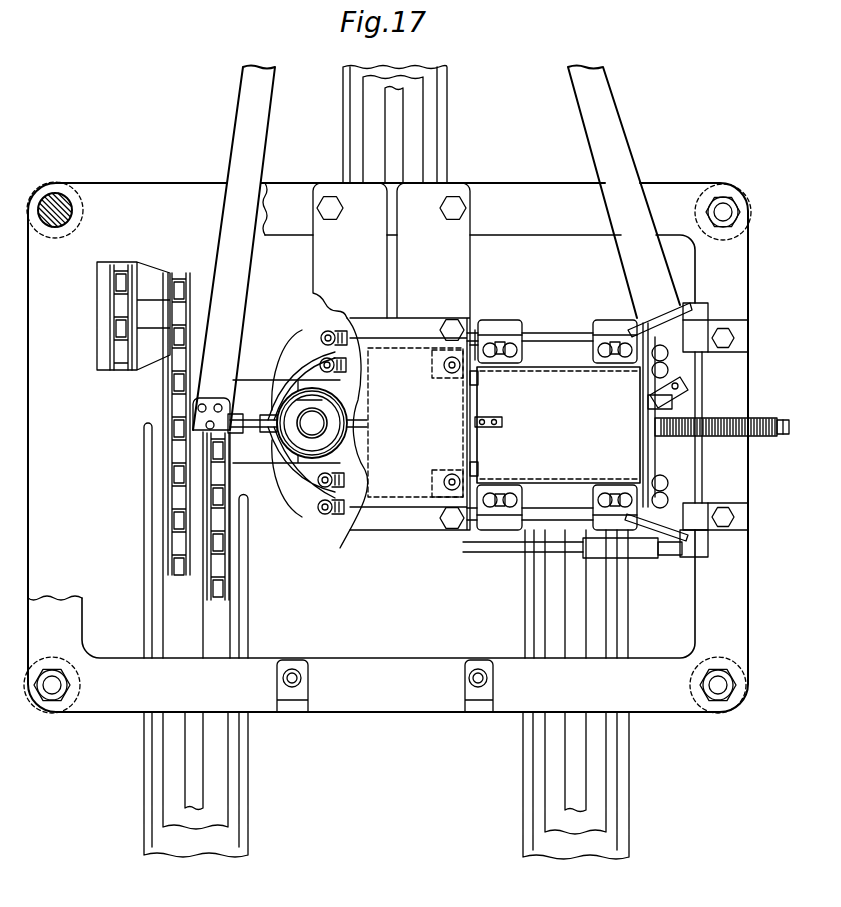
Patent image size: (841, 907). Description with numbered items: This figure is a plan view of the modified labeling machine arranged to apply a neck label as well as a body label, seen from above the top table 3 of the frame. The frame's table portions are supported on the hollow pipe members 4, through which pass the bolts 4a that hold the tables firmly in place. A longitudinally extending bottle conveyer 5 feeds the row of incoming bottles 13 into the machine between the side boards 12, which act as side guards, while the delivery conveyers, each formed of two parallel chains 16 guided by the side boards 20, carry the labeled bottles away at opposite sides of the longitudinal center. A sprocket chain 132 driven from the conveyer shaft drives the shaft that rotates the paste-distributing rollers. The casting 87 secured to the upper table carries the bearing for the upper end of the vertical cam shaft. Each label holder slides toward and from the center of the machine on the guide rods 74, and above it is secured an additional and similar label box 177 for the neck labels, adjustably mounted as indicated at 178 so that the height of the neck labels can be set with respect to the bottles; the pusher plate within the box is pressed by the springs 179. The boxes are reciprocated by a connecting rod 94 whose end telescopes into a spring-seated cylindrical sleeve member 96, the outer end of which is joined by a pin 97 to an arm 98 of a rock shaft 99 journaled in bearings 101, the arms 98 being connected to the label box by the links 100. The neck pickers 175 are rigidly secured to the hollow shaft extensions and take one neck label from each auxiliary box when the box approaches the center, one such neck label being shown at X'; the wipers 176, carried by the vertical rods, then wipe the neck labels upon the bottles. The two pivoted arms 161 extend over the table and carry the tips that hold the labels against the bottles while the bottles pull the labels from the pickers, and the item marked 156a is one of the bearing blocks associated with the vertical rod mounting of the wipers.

The top table 3 is at (389, 448).
The hollow pipe member 4 is at (52, 194).
The bolt 4a is at (64, 198).
The bottle conveyer 5 is at (410, 73).
The side board 12 is at (345, 111).
The incoming bottle 13 is at (280, 421).
The delivery conveyer chain 16 is at (208, 528).
The side board 20 is at (147, 572).
The guide rod 74 is at (566, 336).
The casting 87 is at (391, 365).
The connecting rod 94 is at (513, 548).
The cylindrical sleeve member 96 is at (620, 548).
The pin 97 is at (690, 561).
The arm 98 is at (701, 308).
The rock shaft 99 is at (702, 463).
The link 100 is at (651, 537).
The bearing 101 is at (700, 513).
The sprocket chain 132 is at (121, 360).
The bearing block 156a is at (322, 514).
The arm 161 is at (633, 125).
The picker 175 is at (480, 467).
The wiper 176 is at (284, 394).
The auxiliary label box 177 is at (555, 406).
The adjustable mounting 178 is at (510, 352).
The spring 179 is at (727, 415).